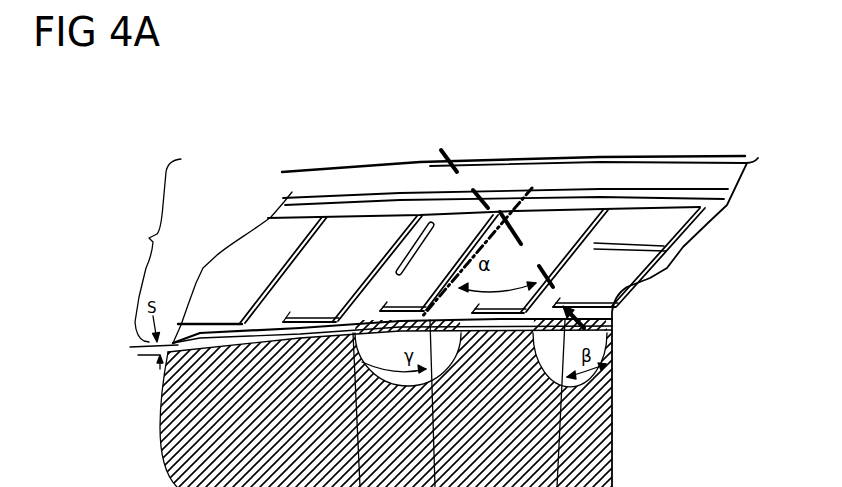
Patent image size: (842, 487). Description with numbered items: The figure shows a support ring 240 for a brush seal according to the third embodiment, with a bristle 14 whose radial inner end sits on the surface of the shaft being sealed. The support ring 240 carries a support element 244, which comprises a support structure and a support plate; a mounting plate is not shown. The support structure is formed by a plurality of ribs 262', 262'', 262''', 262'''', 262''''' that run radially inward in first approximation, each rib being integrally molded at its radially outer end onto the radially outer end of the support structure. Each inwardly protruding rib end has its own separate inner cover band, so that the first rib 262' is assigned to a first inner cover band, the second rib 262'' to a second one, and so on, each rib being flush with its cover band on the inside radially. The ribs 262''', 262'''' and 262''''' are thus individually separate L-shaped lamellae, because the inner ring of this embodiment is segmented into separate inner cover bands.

The bristle 14 is at (446, 156).
The support ring 240 is at (585, 111).
The support element 244 is at (350, 251).
The first rib 262' is at (260, 270).
The second rib 262'' is at (357, 269).
The third rib 262''' is at (479, 253).
The fourth rib 262'''' is at (553, 261).
The fifth rib 262''''' is at (658, 257).